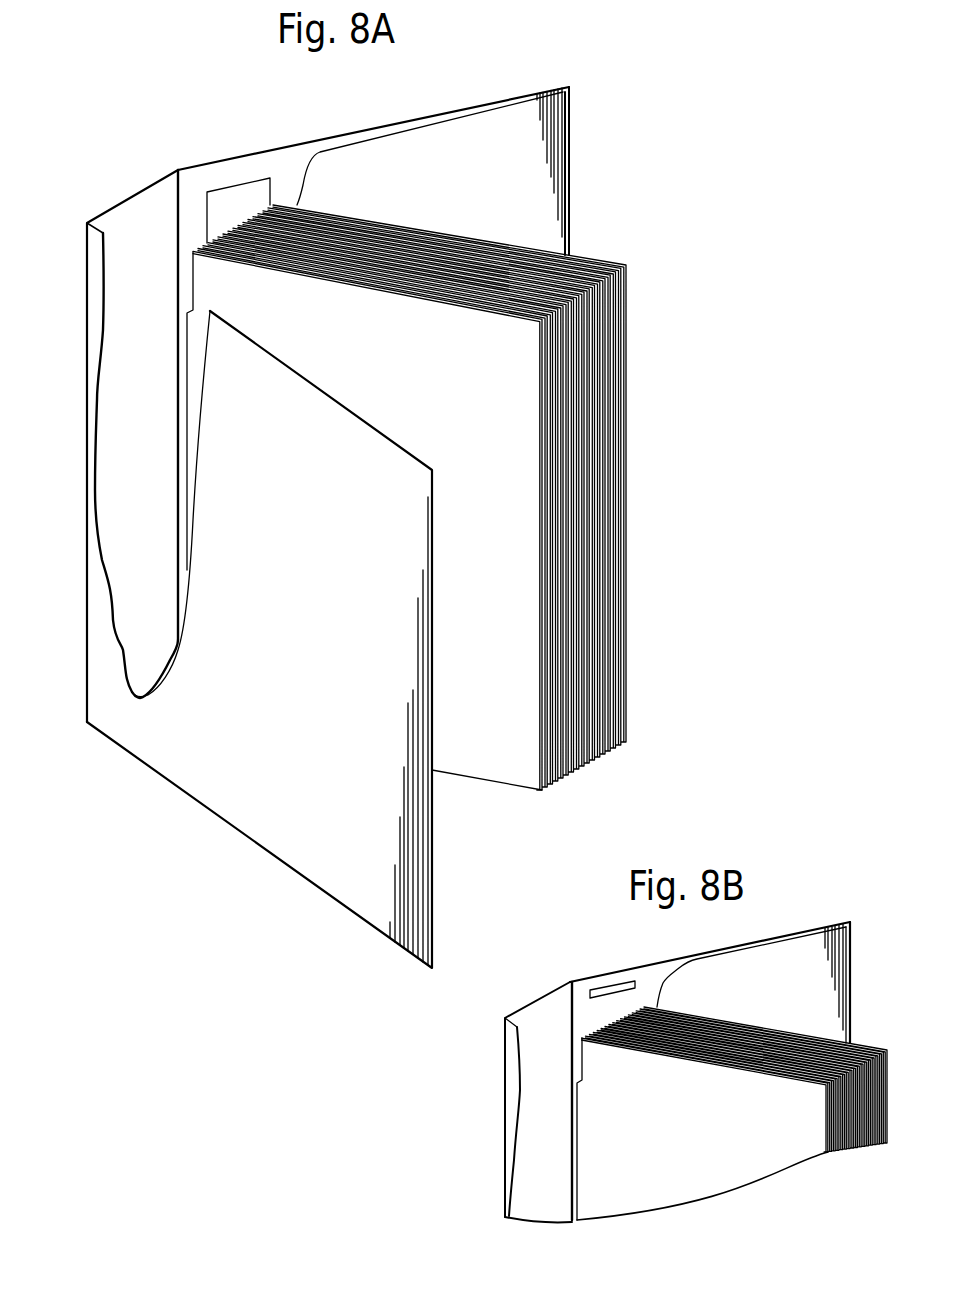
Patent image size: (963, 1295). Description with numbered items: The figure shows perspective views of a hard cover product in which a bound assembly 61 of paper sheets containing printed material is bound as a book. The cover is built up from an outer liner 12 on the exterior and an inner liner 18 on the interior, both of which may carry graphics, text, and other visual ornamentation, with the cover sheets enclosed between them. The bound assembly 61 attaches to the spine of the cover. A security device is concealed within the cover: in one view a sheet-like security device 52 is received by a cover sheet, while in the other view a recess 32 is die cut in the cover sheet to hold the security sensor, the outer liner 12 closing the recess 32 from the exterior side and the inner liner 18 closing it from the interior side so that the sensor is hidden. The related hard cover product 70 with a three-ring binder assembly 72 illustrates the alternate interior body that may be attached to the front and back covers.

In FIG. 8A, the outer liner 12 is at (259, 639).
In FIG. 8B, the outer liner 12 is at (512, 1050).
In FIG. 8A, the inner liner 18 is at (433, 171).
In FIG. 8B, the inner liner 18 is at (710, 982).
In FIG. 8B, the recess 32 is at (618, 988).
In FIG. 8A, the sheet-like security device 52 is at (232, 208).
In FIG. 8B, the bound assembly 61 is at (702, 1129).
In FIG. 8A, the hard cover product 70 is at (292, 146).
In FIG. 8A, the three-ring binder assembly 72 is at (123, 393).